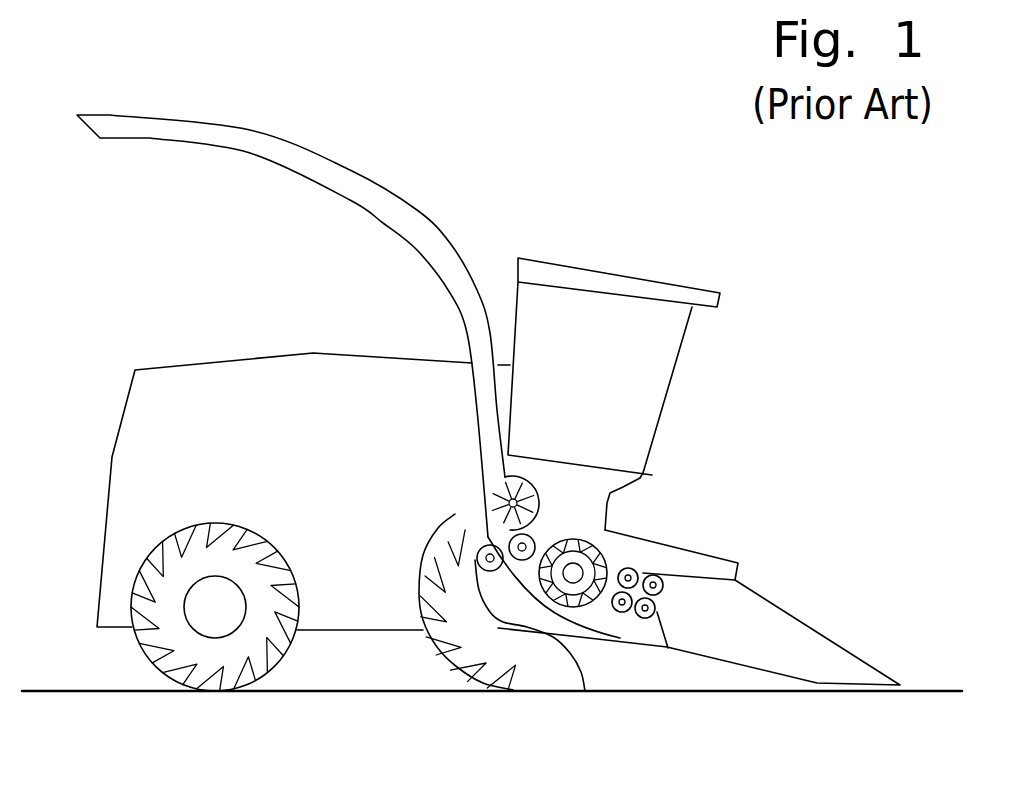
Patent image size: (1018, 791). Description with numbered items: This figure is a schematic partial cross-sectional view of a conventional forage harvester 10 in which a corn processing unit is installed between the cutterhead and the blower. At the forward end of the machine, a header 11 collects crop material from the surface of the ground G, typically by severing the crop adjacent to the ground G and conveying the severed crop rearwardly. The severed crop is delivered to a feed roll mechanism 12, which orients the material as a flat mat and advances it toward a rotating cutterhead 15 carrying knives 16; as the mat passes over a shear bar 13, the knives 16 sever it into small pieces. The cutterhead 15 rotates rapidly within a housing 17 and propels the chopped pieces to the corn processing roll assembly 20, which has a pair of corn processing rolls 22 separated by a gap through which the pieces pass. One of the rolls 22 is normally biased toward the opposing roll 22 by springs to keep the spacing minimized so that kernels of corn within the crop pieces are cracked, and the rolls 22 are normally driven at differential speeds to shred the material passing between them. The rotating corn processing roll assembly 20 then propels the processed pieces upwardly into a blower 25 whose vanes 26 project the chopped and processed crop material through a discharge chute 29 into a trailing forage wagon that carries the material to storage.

The forage harvester 10 is at (782, 316).
The header 11 is at (775, 618).
The feed roll mechanism 12 is at (678, 558).
The shear bar 13 is at (621, 612).
The cutterhead 15 is at (619, 546).
The knives 16 is at (590, 535).
The housing 17 is at (566, 537).
The corn processing roll assembly 20 is at (507, 593).
The corn processing rolls 22 is at (477, 560).
The blower 25 is at (523, 462).
The vanes 26 is at (497, 498).
The discharge chute 29 is at (383, 224).
The ground G is at (929, 691).